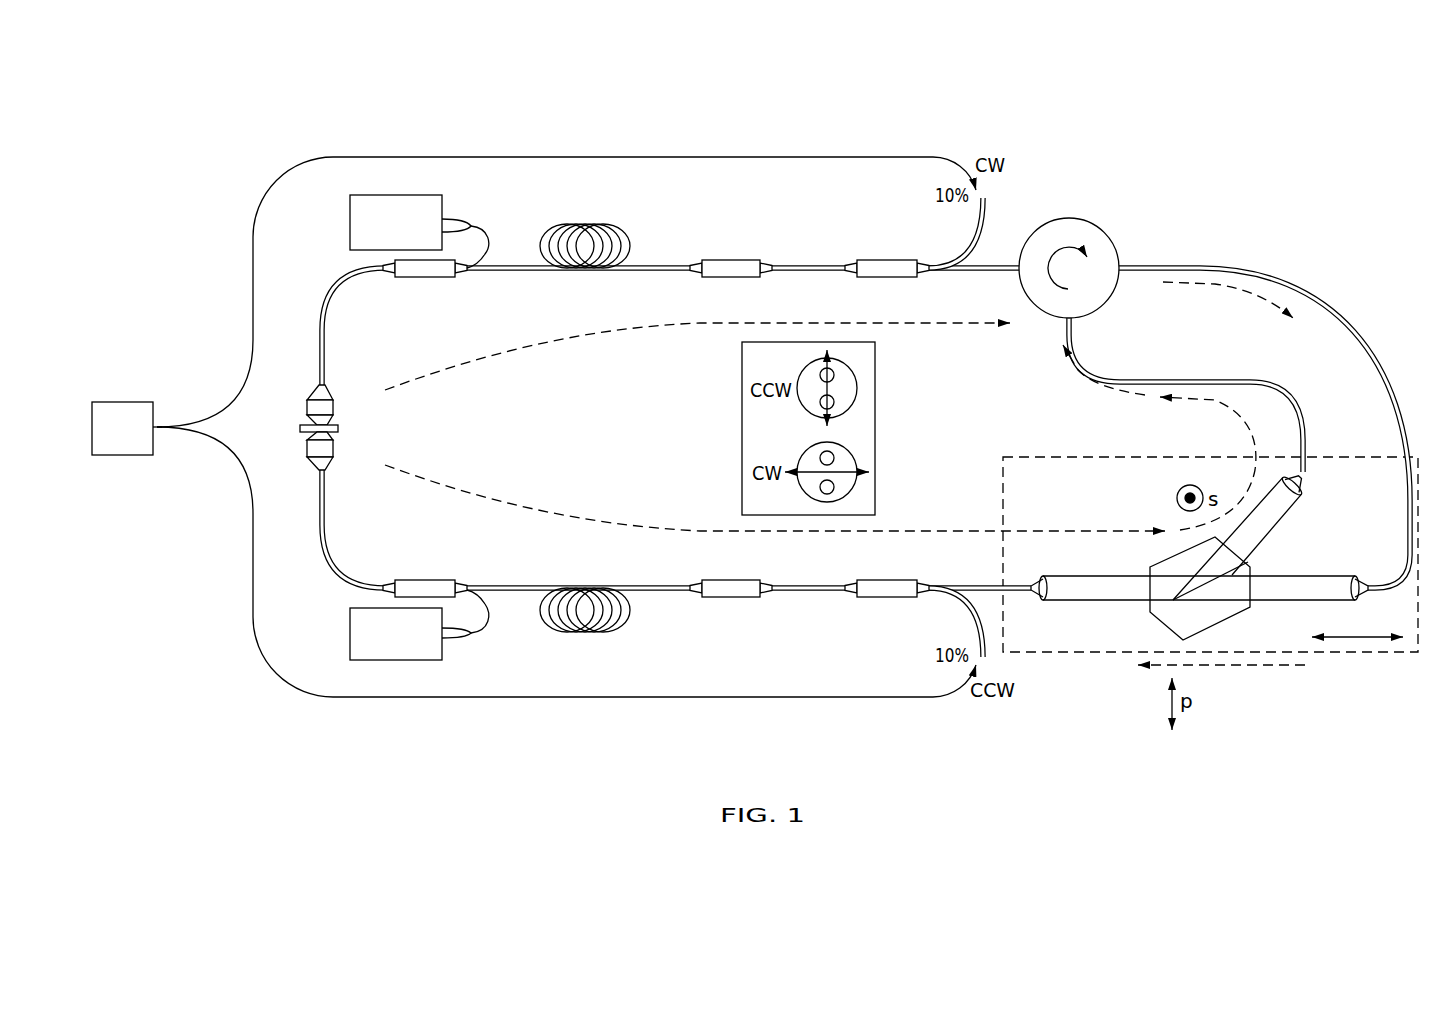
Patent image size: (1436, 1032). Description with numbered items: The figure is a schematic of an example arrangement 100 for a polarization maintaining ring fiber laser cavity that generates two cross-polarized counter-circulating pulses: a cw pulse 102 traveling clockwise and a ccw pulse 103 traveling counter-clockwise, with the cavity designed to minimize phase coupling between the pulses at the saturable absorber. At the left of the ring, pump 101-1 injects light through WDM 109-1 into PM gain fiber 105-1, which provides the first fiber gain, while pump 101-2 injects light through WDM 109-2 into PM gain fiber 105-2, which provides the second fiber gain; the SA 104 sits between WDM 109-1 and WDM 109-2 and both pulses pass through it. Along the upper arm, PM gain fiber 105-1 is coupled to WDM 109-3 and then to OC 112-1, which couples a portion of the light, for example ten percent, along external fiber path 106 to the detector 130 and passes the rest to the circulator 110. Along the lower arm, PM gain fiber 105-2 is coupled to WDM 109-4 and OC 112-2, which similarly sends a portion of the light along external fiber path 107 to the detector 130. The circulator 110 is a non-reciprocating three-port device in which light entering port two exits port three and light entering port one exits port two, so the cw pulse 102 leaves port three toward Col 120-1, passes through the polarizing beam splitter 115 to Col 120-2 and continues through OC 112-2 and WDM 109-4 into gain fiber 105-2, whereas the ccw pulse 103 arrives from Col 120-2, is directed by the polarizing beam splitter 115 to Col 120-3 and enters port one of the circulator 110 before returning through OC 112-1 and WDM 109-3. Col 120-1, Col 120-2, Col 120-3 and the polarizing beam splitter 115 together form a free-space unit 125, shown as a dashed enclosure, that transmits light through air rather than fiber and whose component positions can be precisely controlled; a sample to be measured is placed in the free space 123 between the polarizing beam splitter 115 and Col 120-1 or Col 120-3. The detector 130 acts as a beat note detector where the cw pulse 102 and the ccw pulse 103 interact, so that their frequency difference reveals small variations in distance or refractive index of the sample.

The arrangement 100 is at (1280, 162).
The pump 101-1 is at (350, 220).
The pump 101-2 is at (350, 630).
The cw pulse 102 is at (628, 328).
The ccw pulse 103 is at (628, 524).
The saturable absorber 104 is at (338, 428).
The PM gain fiber 105-1 is at (584, 225).
The PM gain fiber 105-2 is at (584, 632).
The external fiber path 106 is at (642, 157).
The external fiber path 107 is at (642, 697).
The wavelength division multiplexer 109-1 is at (461, 276).
The wavelength division multiplexer 109-2 is at (461, 584).
The wavelength division multiplexer 109-3 is at (732, 260).
The wavelength division multiplexer 109-4 is at (732, 598).
The circulator 110 is at (1113, 240).
The output coupler 112-1 is at (887, 260).
The output coupler 112-2 is at (887, 598).
The polarizing beam splitter 115 is at (1165, 625).
The collimator 120-1 is at (1360, 577).
The collimator 120-2 is at (1040, 577).
The collimator 120-3 is at (1305, 483).
The free space 123 is at (1262, 520).
The unit 125 is at (1190, 456).
The detector D_B 130 is at (122, 402).